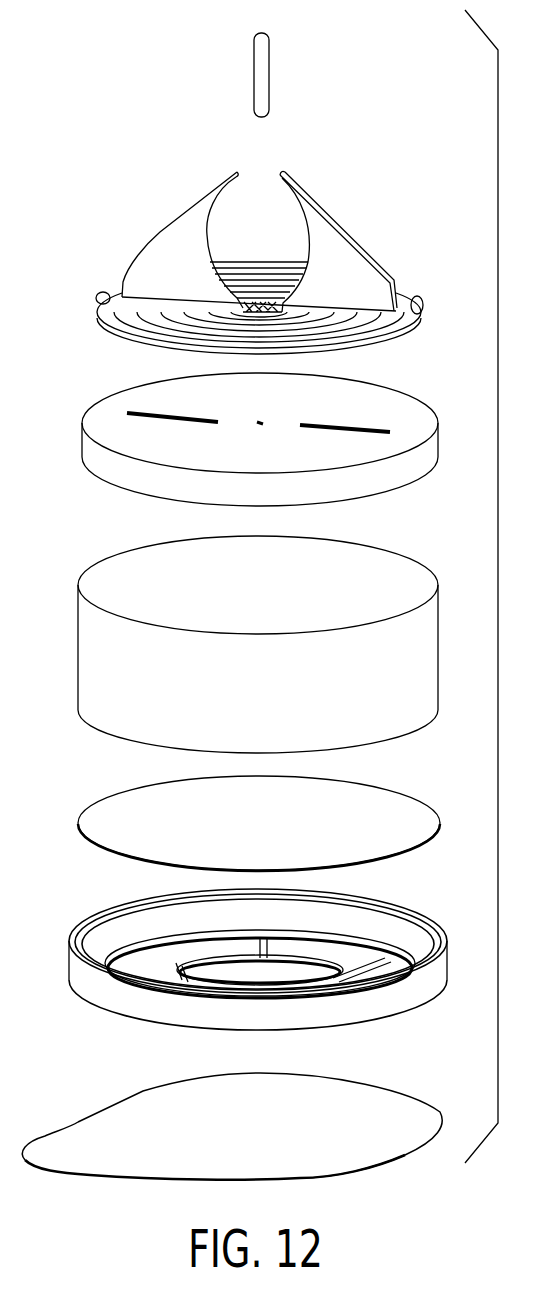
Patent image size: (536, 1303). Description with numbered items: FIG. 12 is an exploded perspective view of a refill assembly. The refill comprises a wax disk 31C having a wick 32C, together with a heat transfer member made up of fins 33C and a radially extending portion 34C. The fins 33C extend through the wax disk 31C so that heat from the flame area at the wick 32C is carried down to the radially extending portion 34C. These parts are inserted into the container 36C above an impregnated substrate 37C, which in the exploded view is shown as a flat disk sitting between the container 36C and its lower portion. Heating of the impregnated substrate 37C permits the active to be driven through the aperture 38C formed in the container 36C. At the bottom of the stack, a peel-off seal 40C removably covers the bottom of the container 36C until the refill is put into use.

The wax disk 31C is at (372, 397).
The wick 32C is at (267, 72).
The fins 33C is at (167, 252).
The radially extending portion 34C is at (150, 330).
The container 36C is at (440, 615).
The impregnated substrate 37C is at (148, 813).
The aperture 38C is at (178, 962).
The peel-off seal 40C is at (143, 1105).